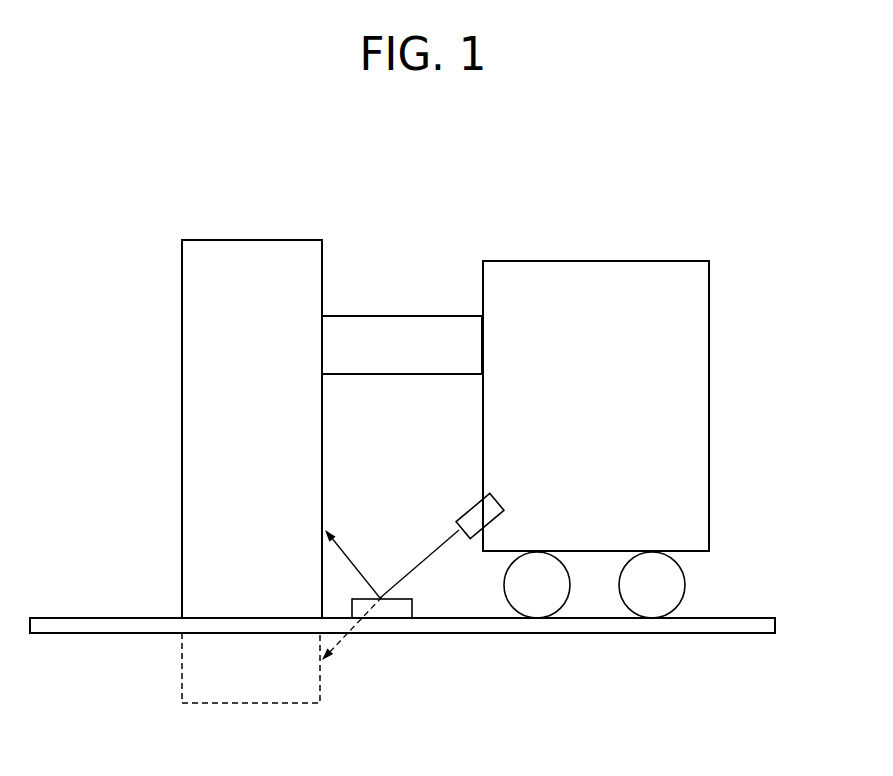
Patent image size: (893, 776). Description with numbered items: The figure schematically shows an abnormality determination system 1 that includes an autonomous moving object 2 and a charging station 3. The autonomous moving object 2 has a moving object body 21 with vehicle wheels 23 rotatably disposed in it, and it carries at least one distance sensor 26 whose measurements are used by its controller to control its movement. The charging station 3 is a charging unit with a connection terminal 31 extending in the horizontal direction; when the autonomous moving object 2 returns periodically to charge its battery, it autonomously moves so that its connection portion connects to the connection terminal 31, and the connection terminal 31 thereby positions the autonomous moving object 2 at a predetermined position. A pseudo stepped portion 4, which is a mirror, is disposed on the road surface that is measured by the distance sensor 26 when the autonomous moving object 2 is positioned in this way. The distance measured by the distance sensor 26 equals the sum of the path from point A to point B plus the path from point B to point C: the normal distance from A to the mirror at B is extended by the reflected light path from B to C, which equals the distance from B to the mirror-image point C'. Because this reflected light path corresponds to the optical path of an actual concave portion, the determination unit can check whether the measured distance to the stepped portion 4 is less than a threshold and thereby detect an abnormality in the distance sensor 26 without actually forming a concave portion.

The abnormality determination system 1 is at (750, 720).
The autonomous moving object 2 is at (604, 443).
The charging station 3 is at (258, 240).
The pseudo stepped portion 4 is at (387, 612).
The moving object body 21 is at (700, 363).
The vehicle wheels 23 is at (537, 608).
The distance sensor 26 is at (476, 510).
The connection terminal 31 is at (402, 316).
The point A is at (457, 530).
The point B is at (381, 596).
The point C is at (351, 535).
The point C' is at (351, 672).